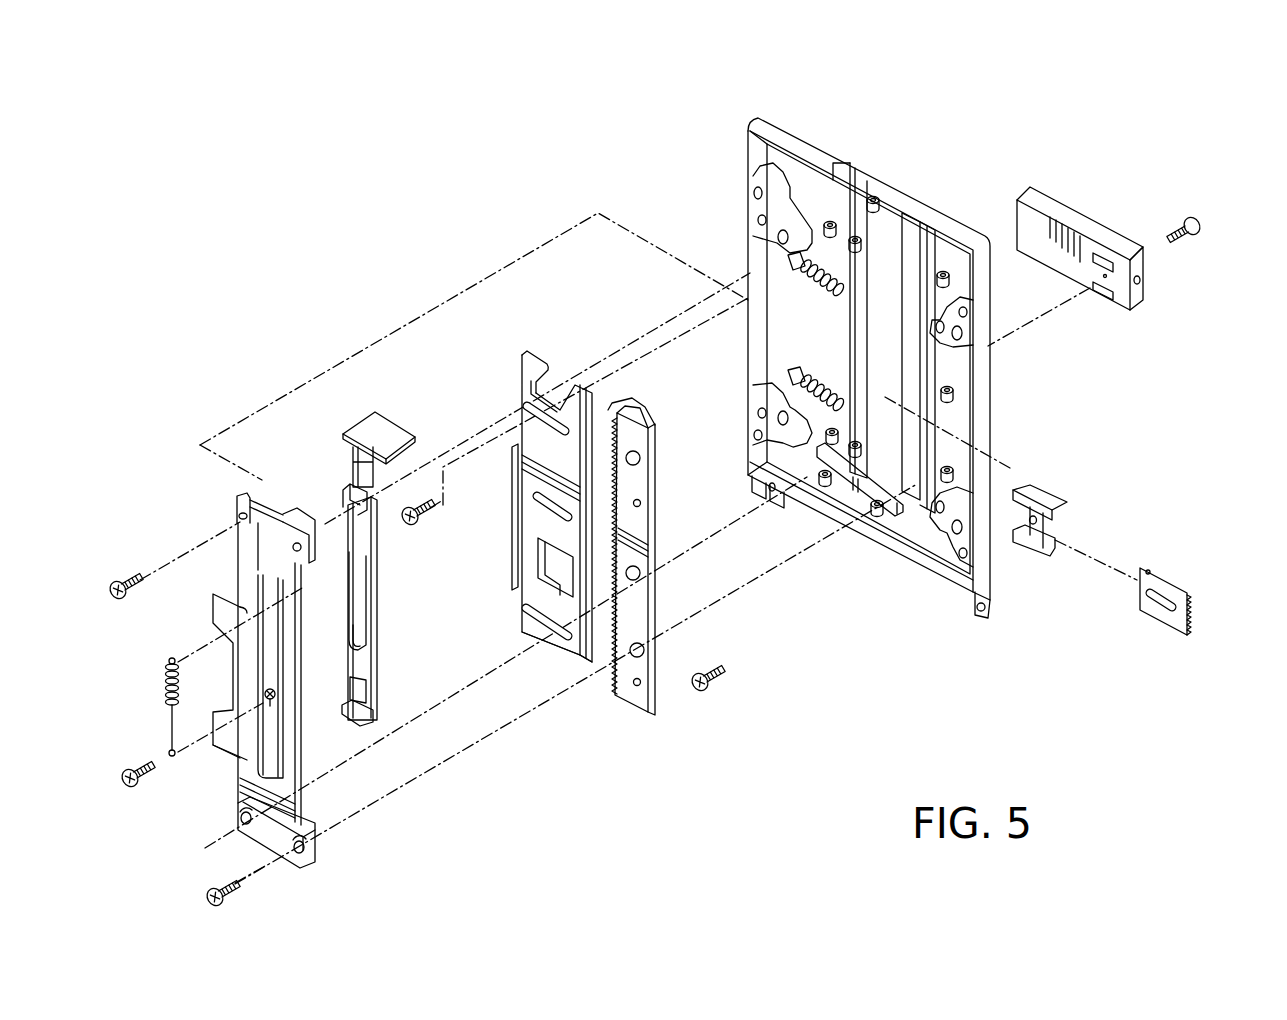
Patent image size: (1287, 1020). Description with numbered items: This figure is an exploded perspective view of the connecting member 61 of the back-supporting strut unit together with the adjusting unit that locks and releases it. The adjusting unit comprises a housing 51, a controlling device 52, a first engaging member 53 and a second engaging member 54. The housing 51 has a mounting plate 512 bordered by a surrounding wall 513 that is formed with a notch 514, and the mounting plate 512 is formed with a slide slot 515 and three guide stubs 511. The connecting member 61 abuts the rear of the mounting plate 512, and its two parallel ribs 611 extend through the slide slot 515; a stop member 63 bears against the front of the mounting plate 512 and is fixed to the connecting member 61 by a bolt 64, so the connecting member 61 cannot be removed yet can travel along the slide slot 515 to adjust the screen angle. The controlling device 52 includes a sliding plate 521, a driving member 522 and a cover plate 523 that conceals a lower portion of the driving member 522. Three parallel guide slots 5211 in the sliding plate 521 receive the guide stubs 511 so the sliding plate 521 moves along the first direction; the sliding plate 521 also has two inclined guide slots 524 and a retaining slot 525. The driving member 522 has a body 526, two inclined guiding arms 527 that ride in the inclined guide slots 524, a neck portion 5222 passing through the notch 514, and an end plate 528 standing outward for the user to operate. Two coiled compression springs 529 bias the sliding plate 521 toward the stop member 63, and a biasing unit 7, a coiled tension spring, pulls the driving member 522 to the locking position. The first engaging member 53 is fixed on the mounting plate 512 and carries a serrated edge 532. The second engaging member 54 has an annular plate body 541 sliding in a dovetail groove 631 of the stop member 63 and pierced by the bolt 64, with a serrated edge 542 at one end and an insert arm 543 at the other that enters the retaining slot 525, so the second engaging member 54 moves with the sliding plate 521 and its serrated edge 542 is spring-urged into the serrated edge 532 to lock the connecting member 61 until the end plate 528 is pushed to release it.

The biasing unit 7 is at (165, 690).
The housing 51 is at (806, 347).
The guide stubs 511 is at (853, 330).
The mounting plate 512 is at (790, 160).
The surrounding wall 513 is at (750, 130).
The notch 514 is at (855, 165).
The slide slot 515 is at (910, 225).
The coiled compression springs 529 is at (800, 290).
The controlling device 52 is at (452, 212).
The sliding plate 521 is at (556, 535).
The parallel guide slots 5211 is at (525, 412).
The driving member 522 is at (368, 567).
The neck portion 5222 is at (362, 473).
The cover plate 523 is at (238, 505).
The inclined guide slots 524 is at (548, 385).
The retaining slot 525 is at (597, 652).
The body 526 is at (380, 707).
The inclined guiding arms 527 is at (350, 500).
The end plate 528 is at (368, 440).
The first engaging member 53 is at (670, 556).
The serrated edge 532 is at (630, 408).
The second engaging member 54 is at (1169, 596).
The plate body 541 is at (1162, 592).
The serrated edge 542 is at (1192, 612).
The insert arm 543 is at (1152, 578).
The connecting member 61 is at (1128, 246).
The ribs 611 is at (1103, 293).
The stop member 63 is at (1084, 511).
The dovetail groove 631 is at (1045, 510).
The bolt 64 is at (1198, 223).